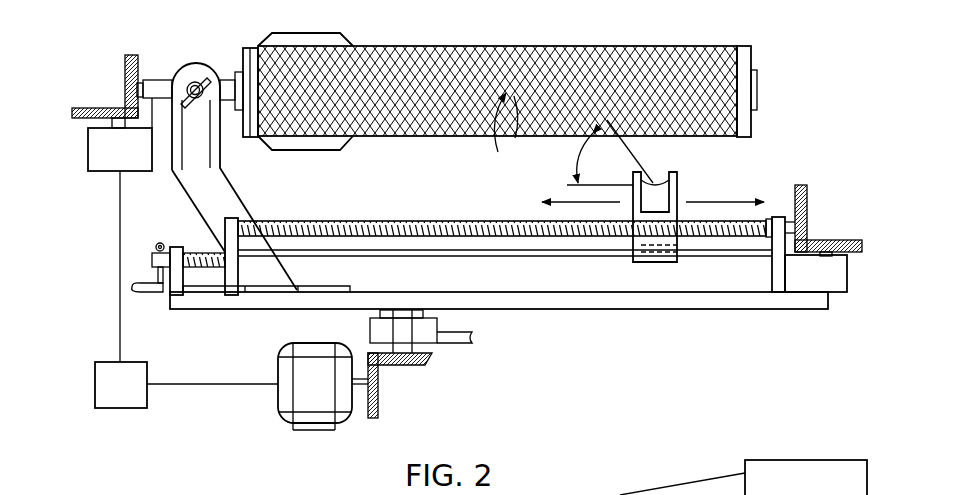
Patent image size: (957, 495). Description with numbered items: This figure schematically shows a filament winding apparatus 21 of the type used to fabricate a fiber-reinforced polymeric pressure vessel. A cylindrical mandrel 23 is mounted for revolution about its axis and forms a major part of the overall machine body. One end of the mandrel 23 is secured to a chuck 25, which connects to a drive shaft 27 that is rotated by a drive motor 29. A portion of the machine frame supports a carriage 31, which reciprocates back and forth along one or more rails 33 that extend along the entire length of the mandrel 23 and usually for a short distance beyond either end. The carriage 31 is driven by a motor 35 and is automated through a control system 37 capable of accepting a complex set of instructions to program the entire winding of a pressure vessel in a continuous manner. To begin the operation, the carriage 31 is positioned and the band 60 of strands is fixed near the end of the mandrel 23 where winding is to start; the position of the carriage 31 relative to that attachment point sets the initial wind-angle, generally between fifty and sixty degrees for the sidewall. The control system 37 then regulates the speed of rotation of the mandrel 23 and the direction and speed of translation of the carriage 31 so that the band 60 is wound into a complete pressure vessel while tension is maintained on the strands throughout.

The wire feeding apparatus 21 is at (157, 36).
The cylindrical mandrel 23 is at (745, 48).
The chuck 25 is at (234, 73).
The drive shaft 27 is at (140, 80).
The drive motor 29 is at (108, 165).
The carriage 31 is at (680, 185).
The rails 33 is at (390, 243).
The motor 35 is at (285, 404).
The control system 37 is at (186, 385).
The band of strands 60 is at (655, 173).